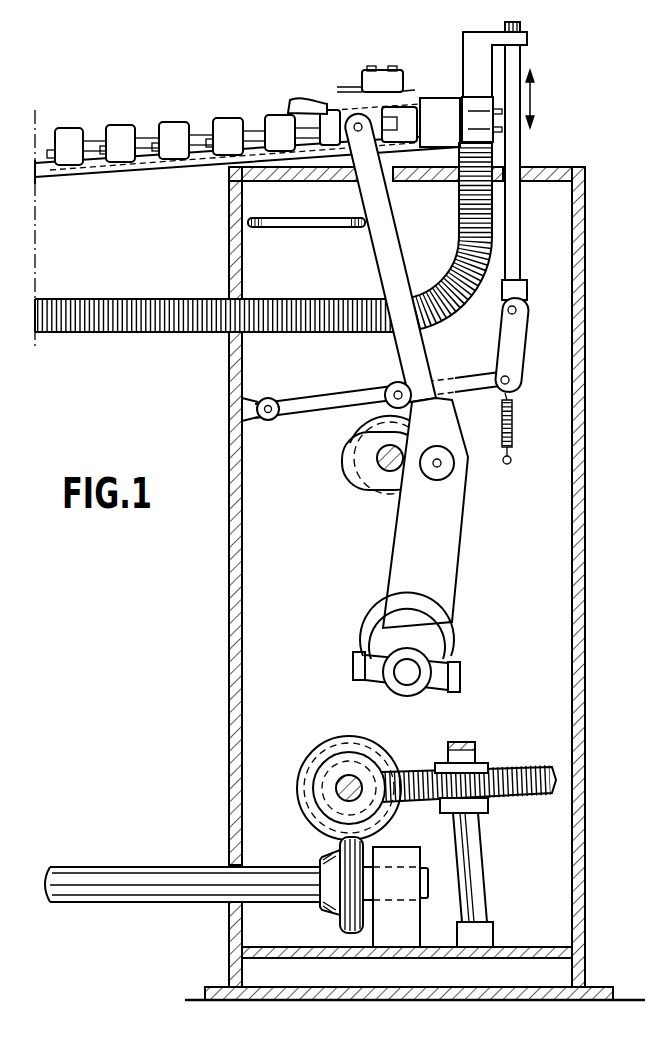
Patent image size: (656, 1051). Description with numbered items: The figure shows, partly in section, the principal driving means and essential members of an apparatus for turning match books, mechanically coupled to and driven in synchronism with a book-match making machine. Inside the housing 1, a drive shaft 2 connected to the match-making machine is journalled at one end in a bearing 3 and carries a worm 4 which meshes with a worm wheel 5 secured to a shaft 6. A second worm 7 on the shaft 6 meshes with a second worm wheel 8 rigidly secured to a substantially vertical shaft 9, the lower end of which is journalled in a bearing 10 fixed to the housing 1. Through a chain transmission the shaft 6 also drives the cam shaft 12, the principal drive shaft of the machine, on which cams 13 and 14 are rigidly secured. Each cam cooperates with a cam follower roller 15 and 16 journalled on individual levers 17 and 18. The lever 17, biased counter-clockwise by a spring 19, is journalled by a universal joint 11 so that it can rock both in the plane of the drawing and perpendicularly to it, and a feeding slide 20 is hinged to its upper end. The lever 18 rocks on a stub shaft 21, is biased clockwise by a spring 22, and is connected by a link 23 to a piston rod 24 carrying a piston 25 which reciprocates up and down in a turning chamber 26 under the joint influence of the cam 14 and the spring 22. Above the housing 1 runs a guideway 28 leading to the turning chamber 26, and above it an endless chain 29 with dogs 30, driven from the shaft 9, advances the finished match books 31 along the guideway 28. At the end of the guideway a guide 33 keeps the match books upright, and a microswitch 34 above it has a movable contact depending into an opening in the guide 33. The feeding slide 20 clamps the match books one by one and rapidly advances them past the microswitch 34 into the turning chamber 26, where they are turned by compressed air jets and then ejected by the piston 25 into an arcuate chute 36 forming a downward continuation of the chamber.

The housing 1 is at (230, 652).
The drive shaft 2 is at (118, 880).
The bearing 3 is at (406, 913).
The worm 4 is at (340, 918).
The worm wheel 5 is at (313, 823).
The shaft 6 is at (340, 790).
The second worm 7 is at (344, 760).
The second worm wheel 8 is at (525, 768).
The vertical shaft 9 is at (472, 862).
The bearing 10 is at (485, 928).
The universal joint 11 is at (450, 660).
The cam shaft 12 is at (390, 478).
The cam 13 is at (345, 468).
The cam 14 is at (377, 425).
The cam follower roller 15 is at (448, 470).
The cam follower roller 16 is at (395, 382).
The lever 17 is at (452, 586).
The lever 18 is at (316, 398).
The spring 19 is at (296, 228).
The feeding slide 20 is at (343, 120).
The stub shaft 21 is at (266, 398).
The spring 22 is at (512, 422).
The link 23 is at (515, 345).
The piston rod 24 is at (517, 243).
The piston 25 is at (463, 43).
The turning chamber 26 is at (471, 98).
The guideway 28 is at (101, 167).
The endless chain 29 is at (42, 145).
The dogs 30 is at (106, 142).
The match books 31 is at (221, 134).
The guide 33 is at (290, 110).
The microswitch 34 is at (378, 70).
The arcuate chute 36 is at (449, 290).